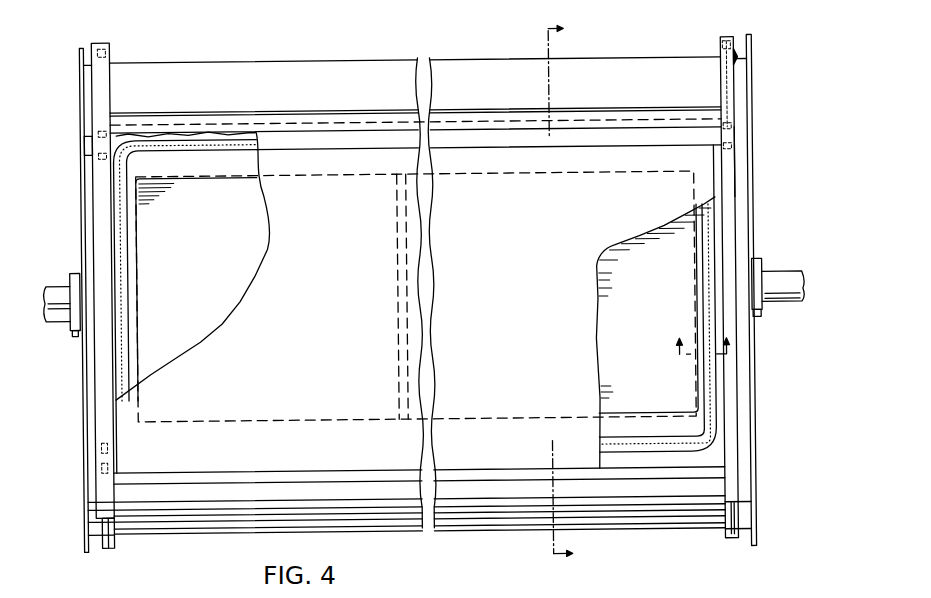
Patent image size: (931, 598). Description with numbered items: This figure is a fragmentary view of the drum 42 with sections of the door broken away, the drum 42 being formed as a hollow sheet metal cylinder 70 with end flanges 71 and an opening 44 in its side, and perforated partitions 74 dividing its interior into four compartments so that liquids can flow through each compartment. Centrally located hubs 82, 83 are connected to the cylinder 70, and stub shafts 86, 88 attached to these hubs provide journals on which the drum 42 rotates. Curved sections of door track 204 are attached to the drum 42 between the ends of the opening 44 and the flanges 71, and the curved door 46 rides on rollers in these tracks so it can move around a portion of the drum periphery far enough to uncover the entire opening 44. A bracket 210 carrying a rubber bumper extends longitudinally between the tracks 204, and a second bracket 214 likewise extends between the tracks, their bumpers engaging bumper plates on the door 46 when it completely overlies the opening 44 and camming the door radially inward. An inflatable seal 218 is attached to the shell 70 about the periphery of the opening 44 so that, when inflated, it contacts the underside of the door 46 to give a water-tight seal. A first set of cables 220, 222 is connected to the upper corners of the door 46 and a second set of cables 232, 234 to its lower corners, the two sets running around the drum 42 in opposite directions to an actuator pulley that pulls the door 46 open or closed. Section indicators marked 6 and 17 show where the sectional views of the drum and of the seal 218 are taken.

The drum 42 is at (352, 52).
The opening 44 is at (138, 217).
The curved door 46 is at (415, 300).
The cylinder 70 is at (393, 550).
The end flanges 71 is at (81, 50).
The perforated partitions 74 is at (400, 352).
The hub 82 is at (74, 334).
The hub 83 is at (764, 313).
The stub shaft 86 is at (60, 290).
The stub shaft 88 is at (788, 276).
The door track 204 is at (104, 202).
The bracket 210 is at (197, 509).
The second bracket 214 is at (498, 137).
The inflatable seal 218 is at (123, 259).
The cable 220 is at (98, 92).
The cable 222 is at (737, 90).
The cable 232 is at (95, 529).
The cable 234 is at (736, 520).
The section line 6- 6 is at (574, 289).
The section line 17- 17 is at (712, 341).